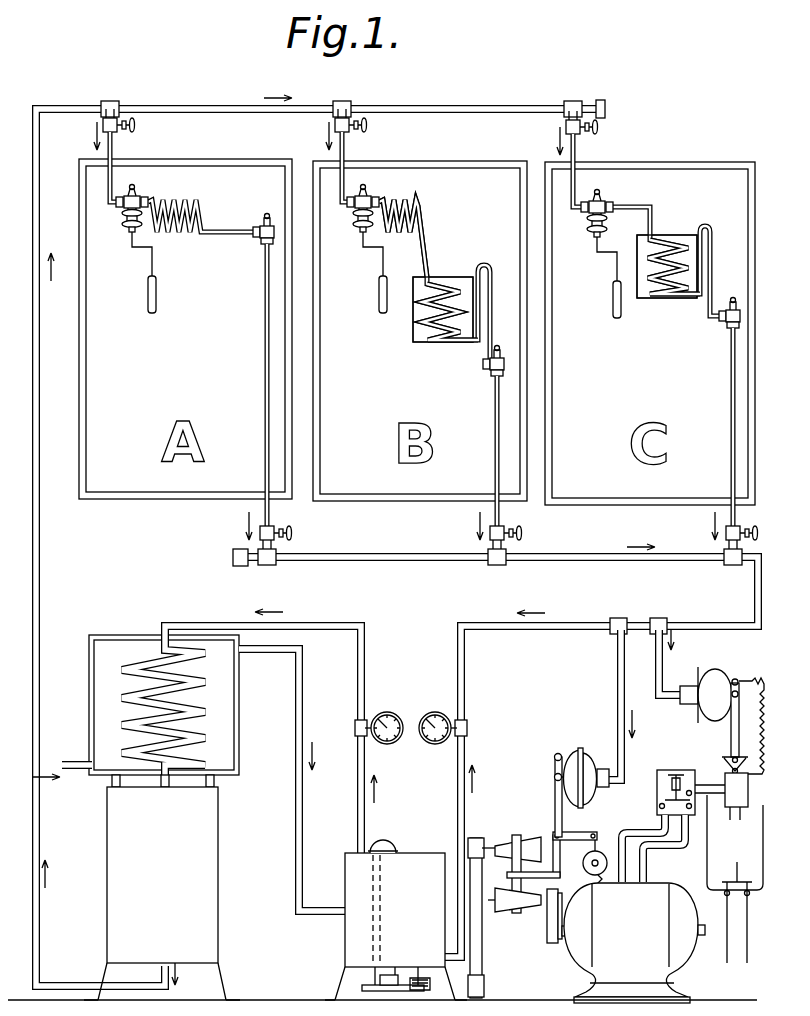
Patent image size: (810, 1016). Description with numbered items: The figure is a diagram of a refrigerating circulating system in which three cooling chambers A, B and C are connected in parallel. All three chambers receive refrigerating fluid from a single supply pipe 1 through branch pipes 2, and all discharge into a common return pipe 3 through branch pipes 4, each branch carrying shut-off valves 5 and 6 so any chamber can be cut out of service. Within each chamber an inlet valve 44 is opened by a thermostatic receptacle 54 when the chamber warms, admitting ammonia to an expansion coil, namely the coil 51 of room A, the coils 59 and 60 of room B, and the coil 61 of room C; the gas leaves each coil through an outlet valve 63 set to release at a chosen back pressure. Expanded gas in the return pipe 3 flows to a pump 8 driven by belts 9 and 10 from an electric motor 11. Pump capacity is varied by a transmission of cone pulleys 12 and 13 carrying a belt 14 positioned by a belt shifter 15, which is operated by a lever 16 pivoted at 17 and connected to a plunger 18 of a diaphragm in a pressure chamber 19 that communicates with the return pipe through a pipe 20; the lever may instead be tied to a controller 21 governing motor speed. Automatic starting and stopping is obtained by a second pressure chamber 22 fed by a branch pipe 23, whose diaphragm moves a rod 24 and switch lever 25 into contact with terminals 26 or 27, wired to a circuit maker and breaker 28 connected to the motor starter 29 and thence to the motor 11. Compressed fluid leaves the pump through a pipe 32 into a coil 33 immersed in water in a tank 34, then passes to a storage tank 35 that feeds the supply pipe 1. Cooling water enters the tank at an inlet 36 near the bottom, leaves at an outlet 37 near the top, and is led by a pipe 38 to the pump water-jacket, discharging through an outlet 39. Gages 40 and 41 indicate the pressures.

The supply pipe 1 is at (384, 113).
The branch pipes 2 is at (114, 151).
The return pipe 3 is at (394, 562).
The branch pipes 4 is at (270, 522).
The shut-off valve 5 is at (103, 123).
The shut-off valve 6 is at (258, 541).
The pump 8 is at (346, 954).
The belt 9 is at (484, 948).
The belt 10 is at (548, 920).
The electric motor 11 is at (612, 942).
The cone pulley 12 is at (507, 912).
The cone pulley 13 is at (512, 840).
The belt 14 is at (553, 838).
The belt shifter 15 is at (586, 870).
The lever 16 is at (555, 800).
The pivot 17 is at (554, 752).
The plunger 18 is at (554, 772).
The pressure chamber 19 is at (585, 798).
The pipe 20 is at (618, 713).
The controller 21 is at (610, 848).
The pressure chamber 22 is at (708, 680).
The branch pipe 23 is at (656, 663).
The rod 24 is at (730, 716).
The switch lever 25 is at (762, 683).
The terminal 26 is at (732, 760).
The terminal 27 is at (738, 758).
The circuit maker and breaker 28 is at (749, 795).
The motor starter 29 is at (657, 788).
The pipe 32 is at (366, 679).
The coil 33 is at (192, 689).
The tank 34 is at (226, 742).
The storage tank 35 is at (218, 803).
The inlet 36 is at (75, 762).
The outlet 37 is at (256, 652).
The pipe 38 is at (295, 858).
The outlet 39 is at (384, 893).
The gage 40 is at (434, 745).
The gage 41 is at (386, 745).
The inlet valve 44 is at (138, 197).
The coil 51 is at (172, 234).
The thermostatic receptacle 54 is at (157, 298).
The coil 59 is at (422, 204).
The coil 60 is at (413, 333).
The coil 61 is at (666, 238).
The outlet valve 63 is at (270, 215).